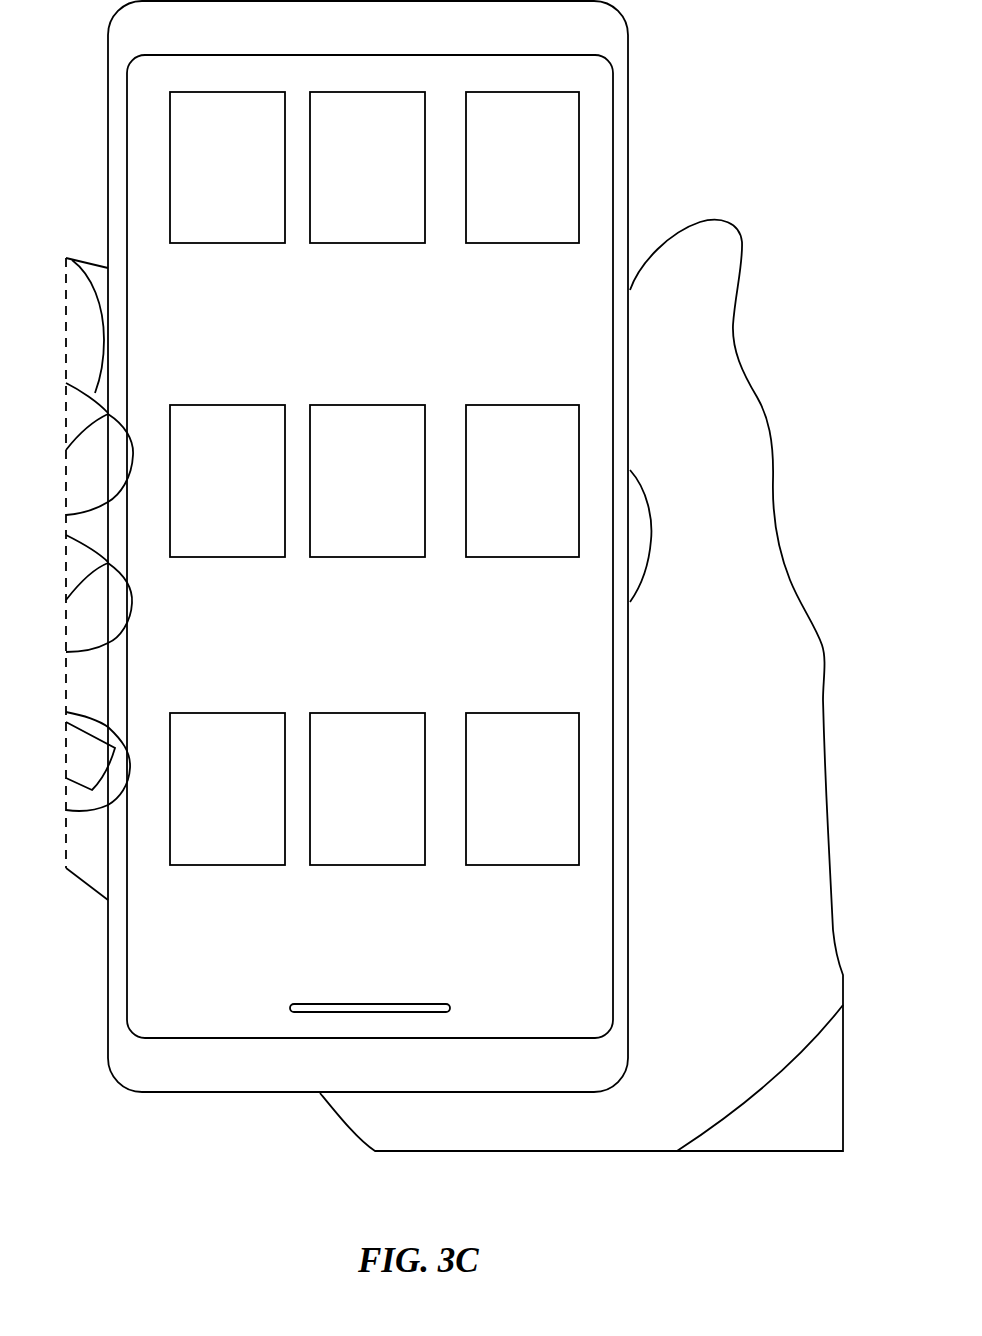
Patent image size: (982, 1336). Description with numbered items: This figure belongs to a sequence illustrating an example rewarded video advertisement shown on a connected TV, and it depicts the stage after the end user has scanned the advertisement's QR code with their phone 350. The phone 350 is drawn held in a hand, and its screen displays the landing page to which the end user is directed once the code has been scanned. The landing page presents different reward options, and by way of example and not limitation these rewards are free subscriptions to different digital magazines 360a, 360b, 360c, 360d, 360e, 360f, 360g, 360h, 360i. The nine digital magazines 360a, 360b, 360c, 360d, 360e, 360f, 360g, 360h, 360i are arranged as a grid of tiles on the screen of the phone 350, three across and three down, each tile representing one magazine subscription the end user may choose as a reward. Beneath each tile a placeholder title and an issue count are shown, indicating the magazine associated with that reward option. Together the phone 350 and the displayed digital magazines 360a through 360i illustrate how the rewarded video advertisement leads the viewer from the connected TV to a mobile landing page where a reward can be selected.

The phone 350 is at (108, 140).
The digital magazine 360a is at (227, 230).
The digital magazine 360b is at (367, 232).
The digital magazine 360c is at (522, 221).
The digital magazine 360d is at (227, 545).
The digital magazine 360e is at (367, 554).
The digital magazine 360f is at (522, 541).
The digital magazine 360g is at (227, 849).
The digital magazine 360h is at (367, 836).
The digital magazine 360i is at (521, 841).